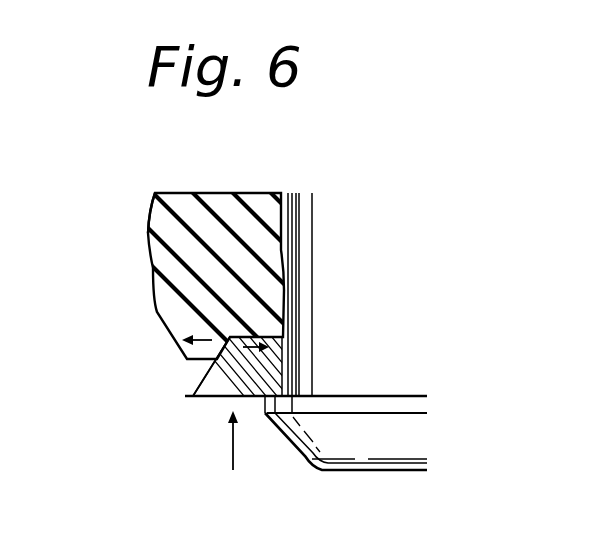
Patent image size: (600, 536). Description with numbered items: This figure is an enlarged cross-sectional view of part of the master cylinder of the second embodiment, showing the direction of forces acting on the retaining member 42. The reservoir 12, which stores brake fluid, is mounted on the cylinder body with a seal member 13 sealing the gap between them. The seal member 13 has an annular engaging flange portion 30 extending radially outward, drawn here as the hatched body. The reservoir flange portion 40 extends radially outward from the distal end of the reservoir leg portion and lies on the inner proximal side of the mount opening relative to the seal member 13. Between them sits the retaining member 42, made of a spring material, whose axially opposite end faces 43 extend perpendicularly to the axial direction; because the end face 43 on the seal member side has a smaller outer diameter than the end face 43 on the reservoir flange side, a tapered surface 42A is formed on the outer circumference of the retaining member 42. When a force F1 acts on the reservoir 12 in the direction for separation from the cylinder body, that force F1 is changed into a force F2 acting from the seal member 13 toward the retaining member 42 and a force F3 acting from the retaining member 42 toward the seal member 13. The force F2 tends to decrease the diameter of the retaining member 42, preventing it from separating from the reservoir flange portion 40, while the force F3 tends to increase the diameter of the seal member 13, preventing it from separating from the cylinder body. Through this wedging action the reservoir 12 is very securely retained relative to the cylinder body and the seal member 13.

The reservoir 12 is at (271, 215).
The seal member 13 is at (141, 233).
The engaging flange portion 30 is at (158, 268).
The reservoir flange portion 40 is at (275, 430).
The retaining member 42 is at (183, 397).
The tapered surface 42A is at (208, 372).
The end face 43 is at (217, 399).
The force F1 is at (231, 449).
The force F2 is at (258, 335).
The force F3 is at (207, 340).